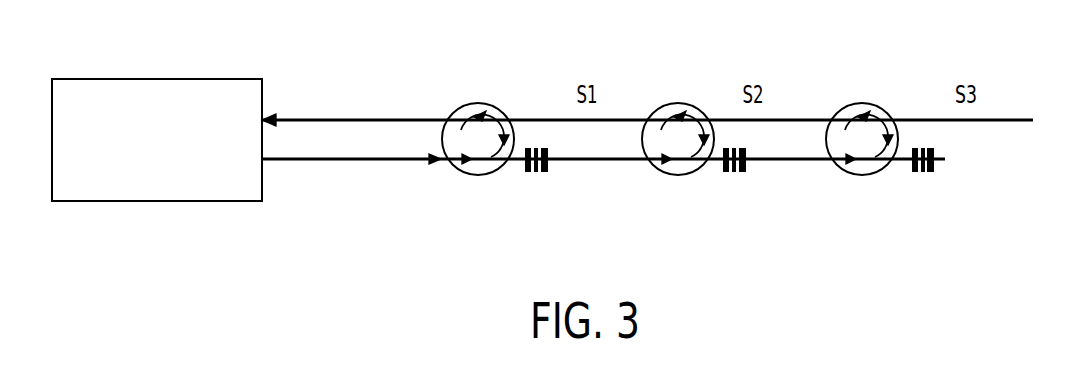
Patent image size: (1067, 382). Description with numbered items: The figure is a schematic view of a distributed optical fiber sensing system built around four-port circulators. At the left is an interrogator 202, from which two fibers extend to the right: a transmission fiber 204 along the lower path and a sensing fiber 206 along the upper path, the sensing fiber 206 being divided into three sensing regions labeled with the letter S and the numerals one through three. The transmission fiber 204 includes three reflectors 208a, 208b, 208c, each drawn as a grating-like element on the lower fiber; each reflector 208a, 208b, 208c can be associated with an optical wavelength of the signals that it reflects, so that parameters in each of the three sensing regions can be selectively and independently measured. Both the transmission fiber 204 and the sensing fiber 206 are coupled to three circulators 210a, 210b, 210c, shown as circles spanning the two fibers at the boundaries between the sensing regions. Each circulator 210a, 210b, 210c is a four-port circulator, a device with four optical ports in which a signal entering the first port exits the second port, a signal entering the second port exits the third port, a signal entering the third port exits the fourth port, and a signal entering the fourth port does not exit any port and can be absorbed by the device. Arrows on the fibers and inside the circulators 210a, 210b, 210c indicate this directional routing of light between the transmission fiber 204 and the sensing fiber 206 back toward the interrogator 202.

The interrogator 202 is at (203, 79).
The transmission fiber 204 is at (332, 162).
The sensing fiber 206 is at (352, 118).
The reflector 208a is at (550, 172).
The reflector 208b is at (748, 172).
The reflector 208c is at (934, 172).
The circulator 210a is at (483, 105).
The circulator 210b is at (692, 105).
The circulator 210c is at (872, 105).